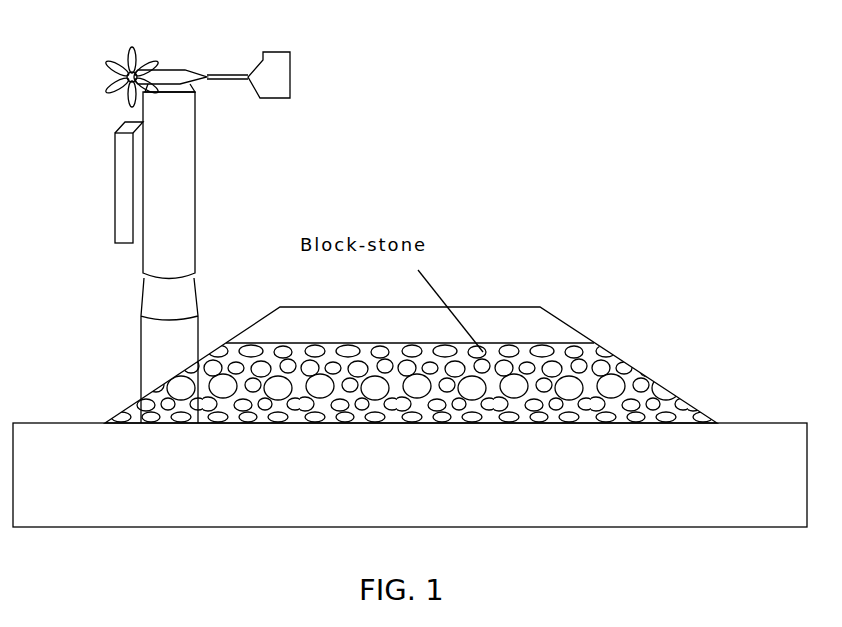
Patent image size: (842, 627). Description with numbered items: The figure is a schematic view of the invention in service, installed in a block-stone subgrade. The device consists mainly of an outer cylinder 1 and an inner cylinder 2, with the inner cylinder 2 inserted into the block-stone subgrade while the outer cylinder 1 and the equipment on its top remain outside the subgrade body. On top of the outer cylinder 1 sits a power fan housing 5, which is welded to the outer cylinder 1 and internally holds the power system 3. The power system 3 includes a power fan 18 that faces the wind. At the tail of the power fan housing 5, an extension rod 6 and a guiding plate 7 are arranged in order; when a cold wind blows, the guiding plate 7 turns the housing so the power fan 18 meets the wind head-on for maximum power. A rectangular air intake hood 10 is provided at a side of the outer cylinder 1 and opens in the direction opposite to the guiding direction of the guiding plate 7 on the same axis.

The outer cylinder 1 is at (211, 185).
The inner cylinder 2 is at (127, 350).
The power system 3 is at (180, 50).
The power fan housing 5 is at (135, 58).
The extension rod 6 is at (236, 49).
The guiding plate 7 is at (291, 61).
The air intake hood 10 is at (88, 182).
The power fan 18 is at (80, 93).